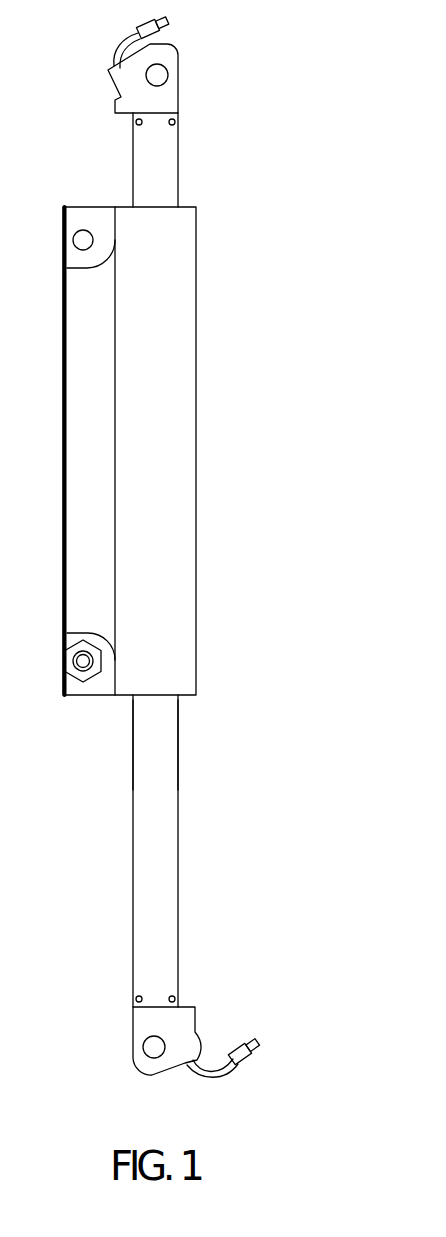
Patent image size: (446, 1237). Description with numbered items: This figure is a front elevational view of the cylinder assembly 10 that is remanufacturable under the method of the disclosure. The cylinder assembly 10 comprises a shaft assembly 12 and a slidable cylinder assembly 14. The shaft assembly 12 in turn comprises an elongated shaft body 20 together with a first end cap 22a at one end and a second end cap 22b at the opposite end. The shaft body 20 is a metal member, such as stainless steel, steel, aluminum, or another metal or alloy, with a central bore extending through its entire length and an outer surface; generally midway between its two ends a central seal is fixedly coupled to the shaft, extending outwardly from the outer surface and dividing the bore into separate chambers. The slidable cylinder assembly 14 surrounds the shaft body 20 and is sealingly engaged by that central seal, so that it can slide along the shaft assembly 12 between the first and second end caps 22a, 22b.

The cylinder assembly 10 is at (250, 42).
The shaft assembly 12 is at (178, 886).
The slidable cylinder assembly 14 is at (193, 450).
The shaft body 20 is at (172, 750).
The first end cap 22a is at (122, 97).
The second end cap 22b is at (150, 1027).